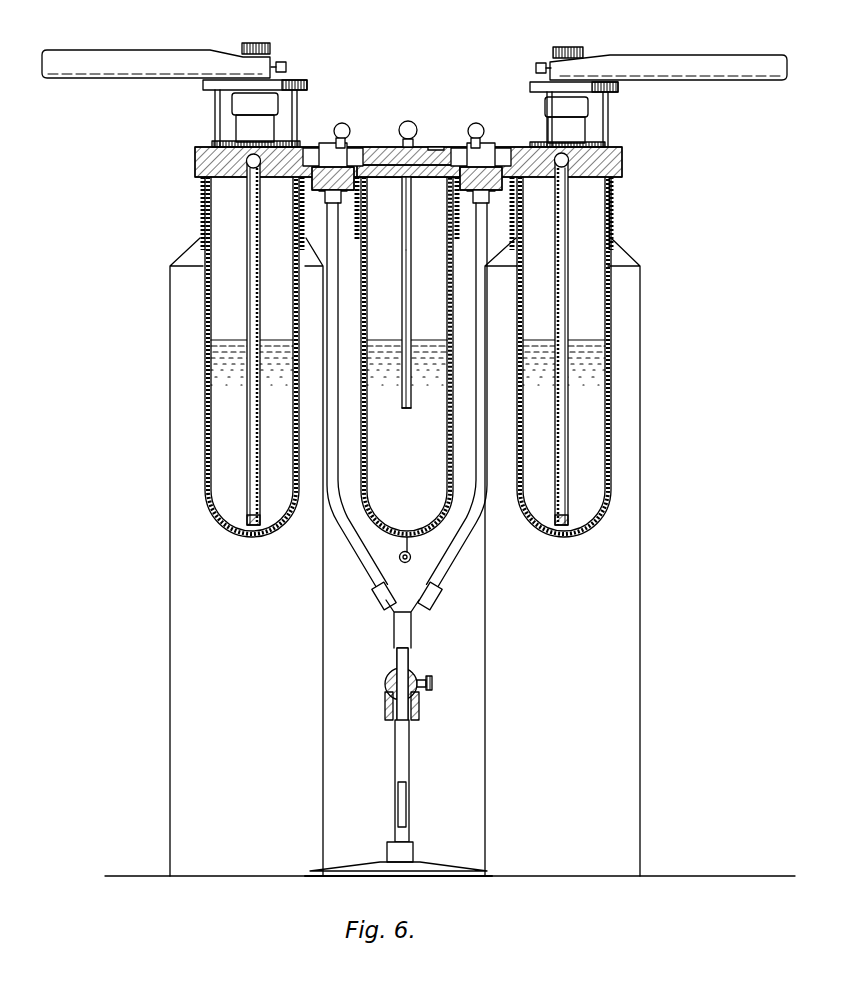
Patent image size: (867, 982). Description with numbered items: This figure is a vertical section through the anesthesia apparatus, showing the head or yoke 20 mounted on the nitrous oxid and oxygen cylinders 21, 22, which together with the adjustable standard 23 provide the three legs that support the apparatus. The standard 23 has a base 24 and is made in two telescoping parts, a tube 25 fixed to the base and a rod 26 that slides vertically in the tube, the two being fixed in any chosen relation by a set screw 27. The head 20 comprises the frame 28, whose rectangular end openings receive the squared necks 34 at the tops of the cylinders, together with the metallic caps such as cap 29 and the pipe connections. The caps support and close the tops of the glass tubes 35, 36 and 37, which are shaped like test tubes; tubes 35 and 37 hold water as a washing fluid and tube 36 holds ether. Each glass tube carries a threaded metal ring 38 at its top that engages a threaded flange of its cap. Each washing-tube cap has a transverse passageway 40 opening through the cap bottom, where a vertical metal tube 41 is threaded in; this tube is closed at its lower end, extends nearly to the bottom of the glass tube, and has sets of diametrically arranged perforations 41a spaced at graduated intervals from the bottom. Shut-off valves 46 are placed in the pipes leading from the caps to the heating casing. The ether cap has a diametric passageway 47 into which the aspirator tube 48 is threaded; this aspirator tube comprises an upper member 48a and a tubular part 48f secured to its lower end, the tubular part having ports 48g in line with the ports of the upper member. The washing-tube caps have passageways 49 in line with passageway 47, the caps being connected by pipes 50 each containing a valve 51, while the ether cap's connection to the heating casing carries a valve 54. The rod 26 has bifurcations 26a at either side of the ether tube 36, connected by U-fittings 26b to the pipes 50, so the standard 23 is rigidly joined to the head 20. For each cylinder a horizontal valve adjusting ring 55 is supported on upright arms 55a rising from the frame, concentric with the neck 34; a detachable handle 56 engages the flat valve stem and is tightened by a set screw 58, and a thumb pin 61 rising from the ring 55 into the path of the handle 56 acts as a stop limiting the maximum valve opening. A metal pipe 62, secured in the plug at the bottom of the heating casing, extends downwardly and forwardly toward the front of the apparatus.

The head or yoke 20 is at (418, 441).
The nitrous oxid cylinder 21 is at (246, 557).
The oxygen cylinder 22 is at (562, 557).
The adjustable standard 23 is at (421, 650).
The base 24 is at (418, 866).
The tube 25 is at (395, 798).
The rod 26 is at (397, 661).
The bifurcations 26a is at (327, 508).
The U-fittings 26b is at (320, 146).
The set screw 27 is at (426, 683).
The frame 28 is at (440, 146).
The cap 29 is at (195, 154).
The squared neck 34 is at (240, 118).
The glass tube 35 is at (205, 440).
The ether tube 36 is at (364, 463).
The glass tube 37 is at (611, 455).
The threaded metal ring 38 is at (200, 220).
The passageway 40 is at (195, 165).
The vertical metal tube 41 is at (247, 314).
The perforations 41a is at (568, 496).
The shut-off valve 46 is at (340, 128).
The diametric passageway 47 is at (387, 170).
The aspirator tube 48 is at (402, 224).
The upper member 48a is at (411, 206).
The tubular part 48f is at (407, 284).
The ports 48g is at (404, 254).
The passageway 49 is at (256, 168).
The pipe 50 is at (348, 150).
The valve 51 is at (328, 145).
The valve 54 is at (398, 123).
The valve adjusting ring 55 is at (298, 102).
The upright arms 55a is at (307, 108).
The detachable handle 56 is at (148, 46).
The set screw 58 is at (283, 60).
The thumb pin 61 is at (256, 43).
The metal pipe 62 is at (401, 553).